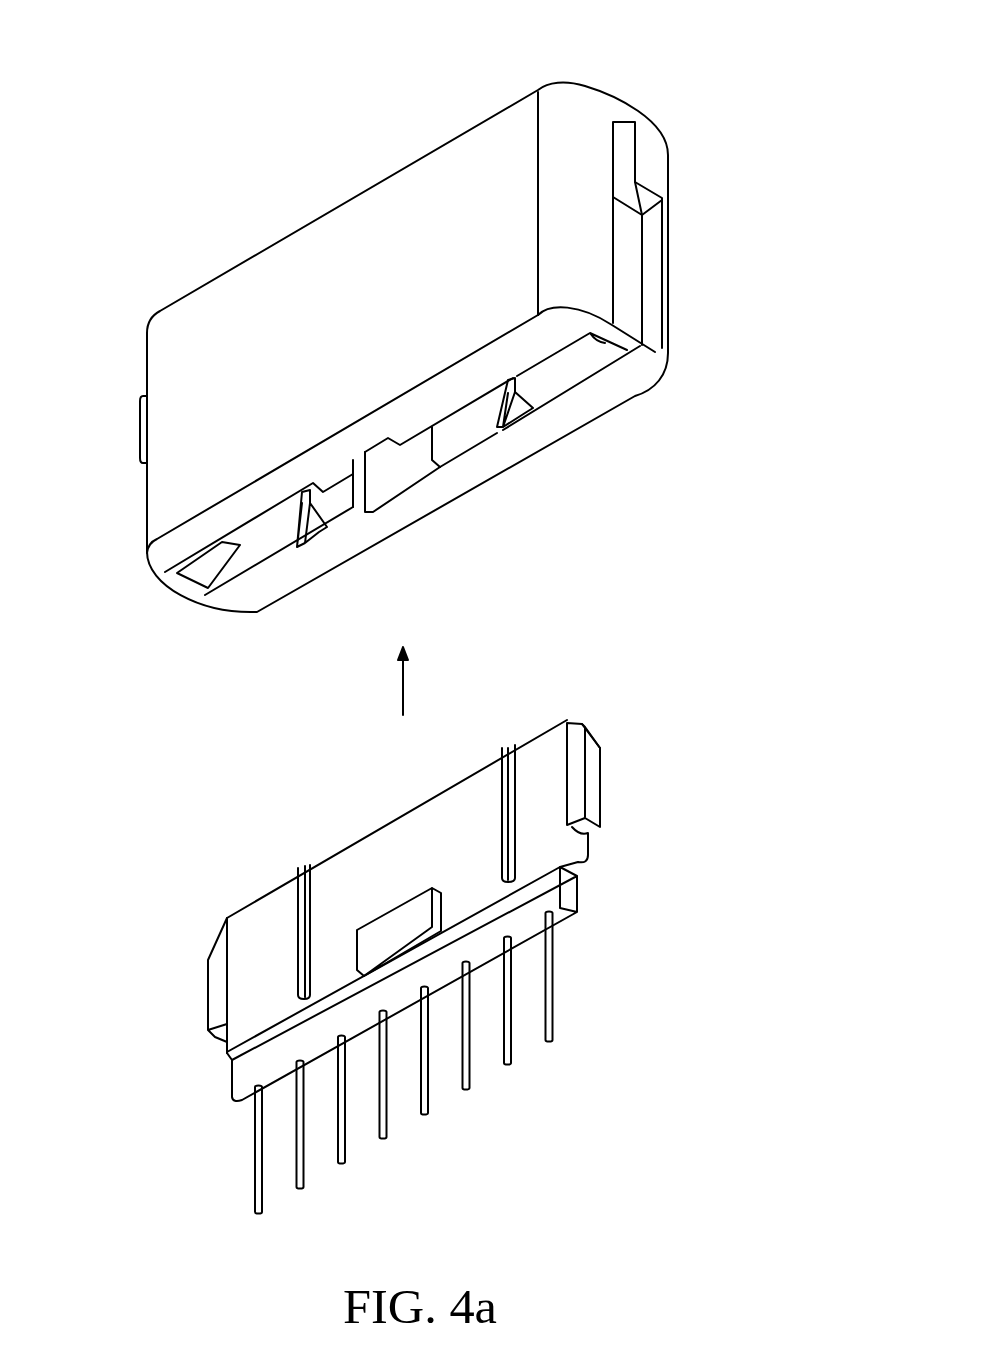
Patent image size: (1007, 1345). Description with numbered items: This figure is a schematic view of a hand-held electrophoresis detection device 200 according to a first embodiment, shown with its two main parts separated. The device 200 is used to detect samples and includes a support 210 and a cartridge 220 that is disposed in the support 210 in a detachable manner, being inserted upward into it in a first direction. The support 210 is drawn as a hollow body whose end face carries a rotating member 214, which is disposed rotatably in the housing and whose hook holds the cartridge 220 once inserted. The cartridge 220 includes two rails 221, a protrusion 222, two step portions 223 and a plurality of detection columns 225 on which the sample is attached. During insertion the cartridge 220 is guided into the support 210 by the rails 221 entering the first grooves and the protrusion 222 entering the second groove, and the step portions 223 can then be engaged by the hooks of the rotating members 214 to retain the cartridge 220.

The hand-held electrophoresis detection device 200 is at (110, 35).
The support 210 is at (493, 314).
The rotating member 214 is at (655, 168).
The cartridge 220 is at (385, 967).
The rail 221 is at (515, 840).
The protrusion 222 is at (372, 937).
The step portion 223 is at (208, 1033).
The detection column 225 is at (555, 991).